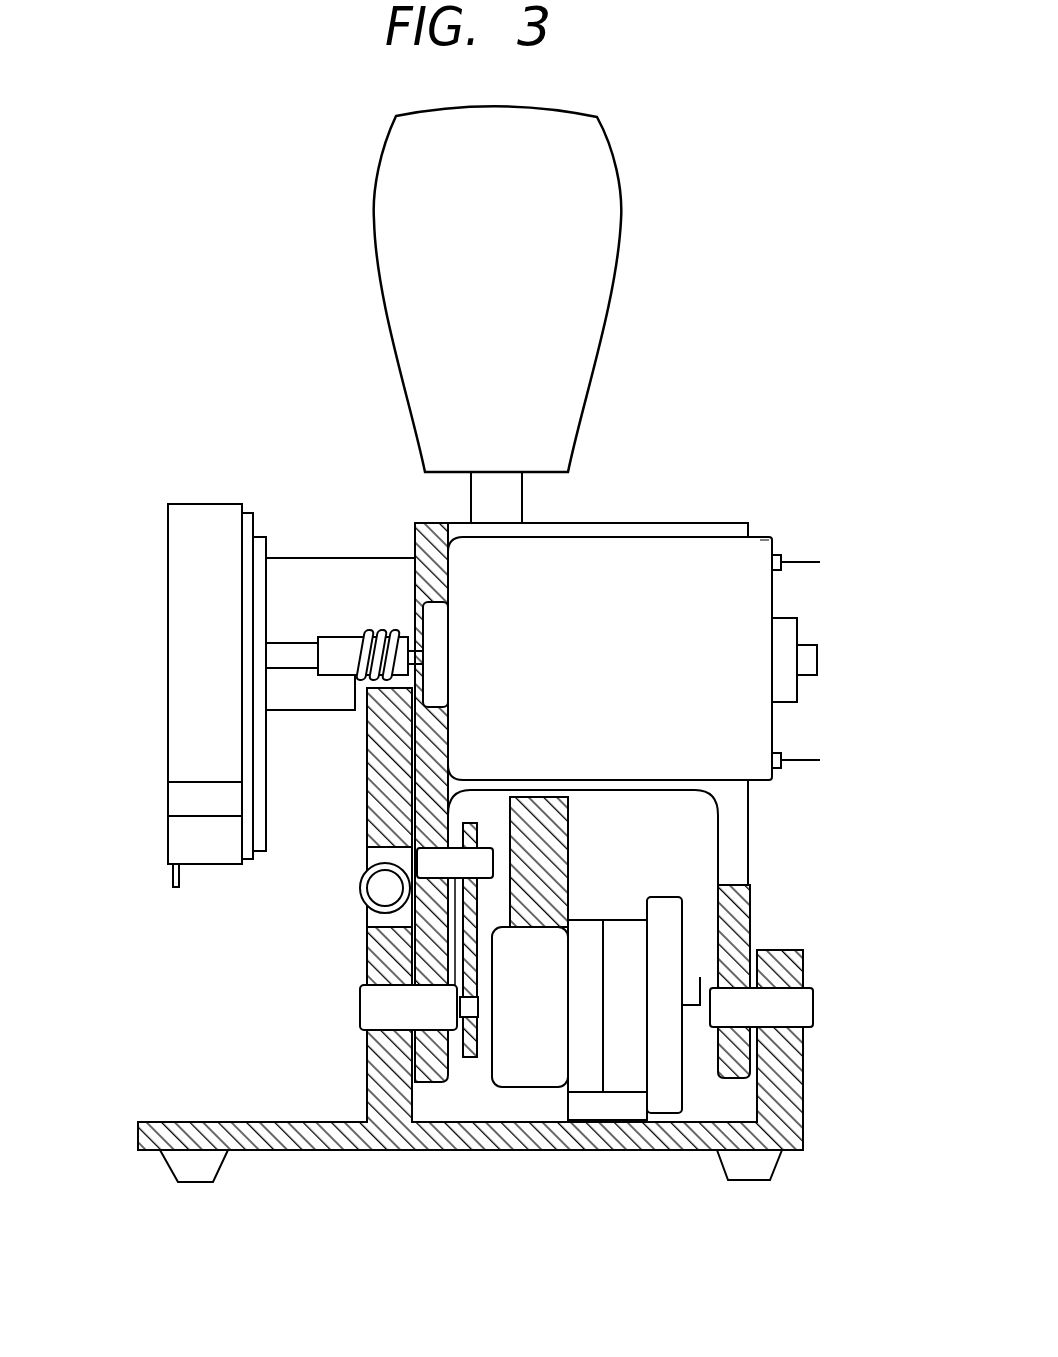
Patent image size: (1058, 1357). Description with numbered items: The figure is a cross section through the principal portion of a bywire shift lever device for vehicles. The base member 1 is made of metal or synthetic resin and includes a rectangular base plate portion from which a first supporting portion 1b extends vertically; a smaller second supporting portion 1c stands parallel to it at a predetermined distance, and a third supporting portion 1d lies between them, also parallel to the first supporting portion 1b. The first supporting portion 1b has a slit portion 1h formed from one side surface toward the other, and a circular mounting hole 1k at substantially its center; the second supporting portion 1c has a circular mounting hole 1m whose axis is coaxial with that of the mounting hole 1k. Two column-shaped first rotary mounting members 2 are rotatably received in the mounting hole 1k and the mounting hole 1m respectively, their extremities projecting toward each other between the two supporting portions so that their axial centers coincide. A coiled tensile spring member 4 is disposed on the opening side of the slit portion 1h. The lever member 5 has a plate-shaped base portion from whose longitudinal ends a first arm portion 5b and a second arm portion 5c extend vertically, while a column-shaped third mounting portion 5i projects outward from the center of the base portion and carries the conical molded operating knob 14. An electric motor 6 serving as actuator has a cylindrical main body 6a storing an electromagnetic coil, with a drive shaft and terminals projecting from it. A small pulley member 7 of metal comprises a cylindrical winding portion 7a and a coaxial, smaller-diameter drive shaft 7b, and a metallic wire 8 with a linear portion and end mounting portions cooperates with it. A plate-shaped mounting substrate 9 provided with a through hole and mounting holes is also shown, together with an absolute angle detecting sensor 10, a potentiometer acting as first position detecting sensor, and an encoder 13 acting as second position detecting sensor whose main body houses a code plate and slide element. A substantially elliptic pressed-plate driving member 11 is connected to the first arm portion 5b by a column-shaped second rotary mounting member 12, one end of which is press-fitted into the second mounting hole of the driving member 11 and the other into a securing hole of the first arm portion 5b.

The base member 1 is at (412, 1156).
The first supporting portion 1b is at (362, 1083).
The second supporting portion 1c is at (803, 1090).
The third supporting portion 1d is at (510, 1102).
The slit portion 1h is at (372, 850).
The mounting hole 1k is at (370, 973).
The mounting hole 1m is at (738, 1047).
The first rotary mounting member 2 is at (360, 1012).
The tensile spring member 4 is at (353, 903).
The lever member 5 is at (678, 517).
The first arm portion 5b is at (424, 788).
The second arm portion 5c is at (752, 900).
The third mounting portion 5i is at (525, 500).
The electric motor 6 is at (778, 598).
The main body 6a is at (738, 573).
The pulley member 7 is at (333, 640).
The winding portion 7a is at (350, 652).
The drive shaft 7b is at (292, 640).
The wire 8 is at (390, 635).
The mounting substrate 9 is at (265, 548).
The absolute angle detecting sensor 10 is at (611, 1102).
The driving member 11 is at (478, 918).
The second rotary mounting member 12 is at (495, 860).
The encoder 13 is at (158, 699).
The operating knob 14 is at (631, 226).